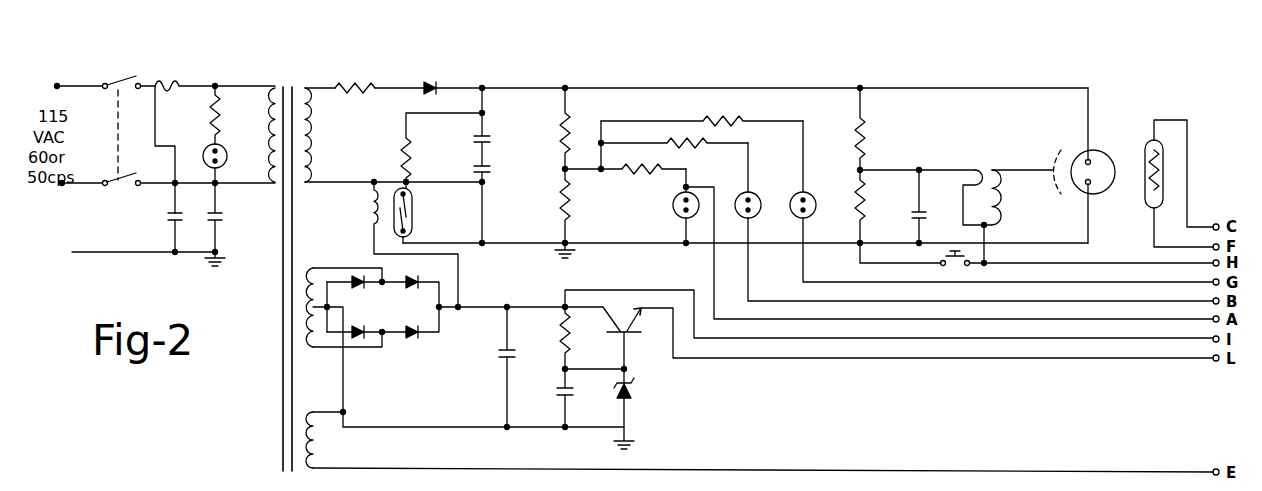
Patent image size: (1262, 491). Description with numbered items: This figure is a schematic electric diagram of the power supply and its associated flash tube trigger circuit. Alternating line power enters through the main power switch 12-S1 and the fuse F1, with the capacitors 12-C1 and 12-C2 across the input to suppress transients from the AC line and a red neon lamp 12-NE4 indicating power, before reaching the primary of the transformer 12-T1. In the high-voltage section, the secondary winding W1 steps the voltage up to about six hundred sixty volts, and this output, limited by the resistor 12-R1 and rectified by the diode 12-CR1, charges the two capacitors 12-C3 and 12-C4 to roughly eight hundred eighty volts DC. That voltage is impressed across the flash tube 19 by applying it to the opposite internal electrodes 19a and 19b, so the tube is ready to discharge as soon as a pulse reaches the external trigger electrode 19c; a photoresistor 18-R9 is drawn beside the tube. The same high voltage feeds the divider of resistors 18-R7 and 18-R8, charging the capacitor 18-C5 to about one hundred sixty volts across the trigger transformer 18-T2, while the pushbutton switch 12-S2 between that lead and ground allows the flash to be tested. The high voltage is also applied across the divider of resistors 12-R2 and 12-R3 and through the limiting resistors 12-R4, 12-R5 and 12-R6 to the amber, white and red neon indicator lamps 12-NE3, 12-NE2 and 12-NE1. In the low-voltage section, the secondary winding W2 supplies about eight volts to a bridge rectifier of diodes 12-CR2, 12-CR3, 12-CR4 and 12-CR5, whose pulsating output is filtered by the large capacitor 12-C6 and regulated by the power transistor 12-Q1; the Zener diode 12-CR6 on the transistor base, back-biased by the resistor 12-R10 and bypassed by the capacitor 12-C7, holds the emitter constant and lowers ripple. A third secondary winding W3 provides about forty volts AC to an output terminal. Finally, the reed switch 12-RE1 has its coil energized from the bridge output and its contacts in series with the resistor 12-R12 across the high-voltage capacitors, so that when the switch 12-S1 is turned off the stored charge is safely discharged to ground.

The main power switch 12-S1 is at (114, 143).
The fuse F1 is at (167, 101).
The capacitor 12-C1 is at (147, 226).
The capacitor 12-C2 is at (231, 217).
The neon lamp 12-NE4 is at (231, 134).
The transformer 12-T1 is at (278, 264).
The secondary winding W1 is at (326, 135).
The resistor 12-R1 is at (351, 77).
The diode 12-CR1 is at (437, 76).
The resistor 12-R12 is at (423, 150).
The capacitor 12-C3 is at (494, 127).
The capacitor 12-C4 is at (498, 200).
The reed switch 12-RE1 is at (377, 244).
The voltage divider resistor 12-R2 is at (552, 128).
The voltage divider resistor 12-R3 is at (552, 206).
The limiting resistor 12-R4 is at (702, 110).
The limiting resistor 12-R5 is at (674, 153).
The limiting resistor 12-R6 is at (643, 177).
The neon indicator lamp 12-NE1 is at (668, 206).
The neon indicator lamp 12-NE2 is at (974, 222).
The neon indicator lamp 12-NE3 is at (989, 201).
The voltage divider resistor 18-R7 is at (886, 129).
The voltage divider resistor 18-R8 is at (876, 206).
The capacitor 18-C5 is at (932, 207).
The trigger transformer 18-T2 is at (1004, 188).
The pushbutton switch 12-S2 is at (947, 269).
The flash tube 19 is at (1108, 148).
The electrode 19a is at (1086, 160).
The electrode 19b is at (1086, 185).
The trigger electrode 19c is at (1058, 166).
The photoresistor 18-R9 is at (1176, 168).
The secondary winding W2 is at (318, 297).
The diode 12-CR2 is at (362, 289).
The diode 12-CR3 is at (417, 273).
The diode 12-CR4 is at (356, 340).
The diode 12-CR5 is at (404, 320).
The capacitor 12-C6 is at (486, 367).
The resistor 12-R10 is at (547, 338).
The capacitor 12-C7 is at (546, 398).
The power transistor 12-Q1 is at (889, 335).
The Zener diode 12-CR6 is at (642, 413).
The secondary winding W3 is at (328, 440).